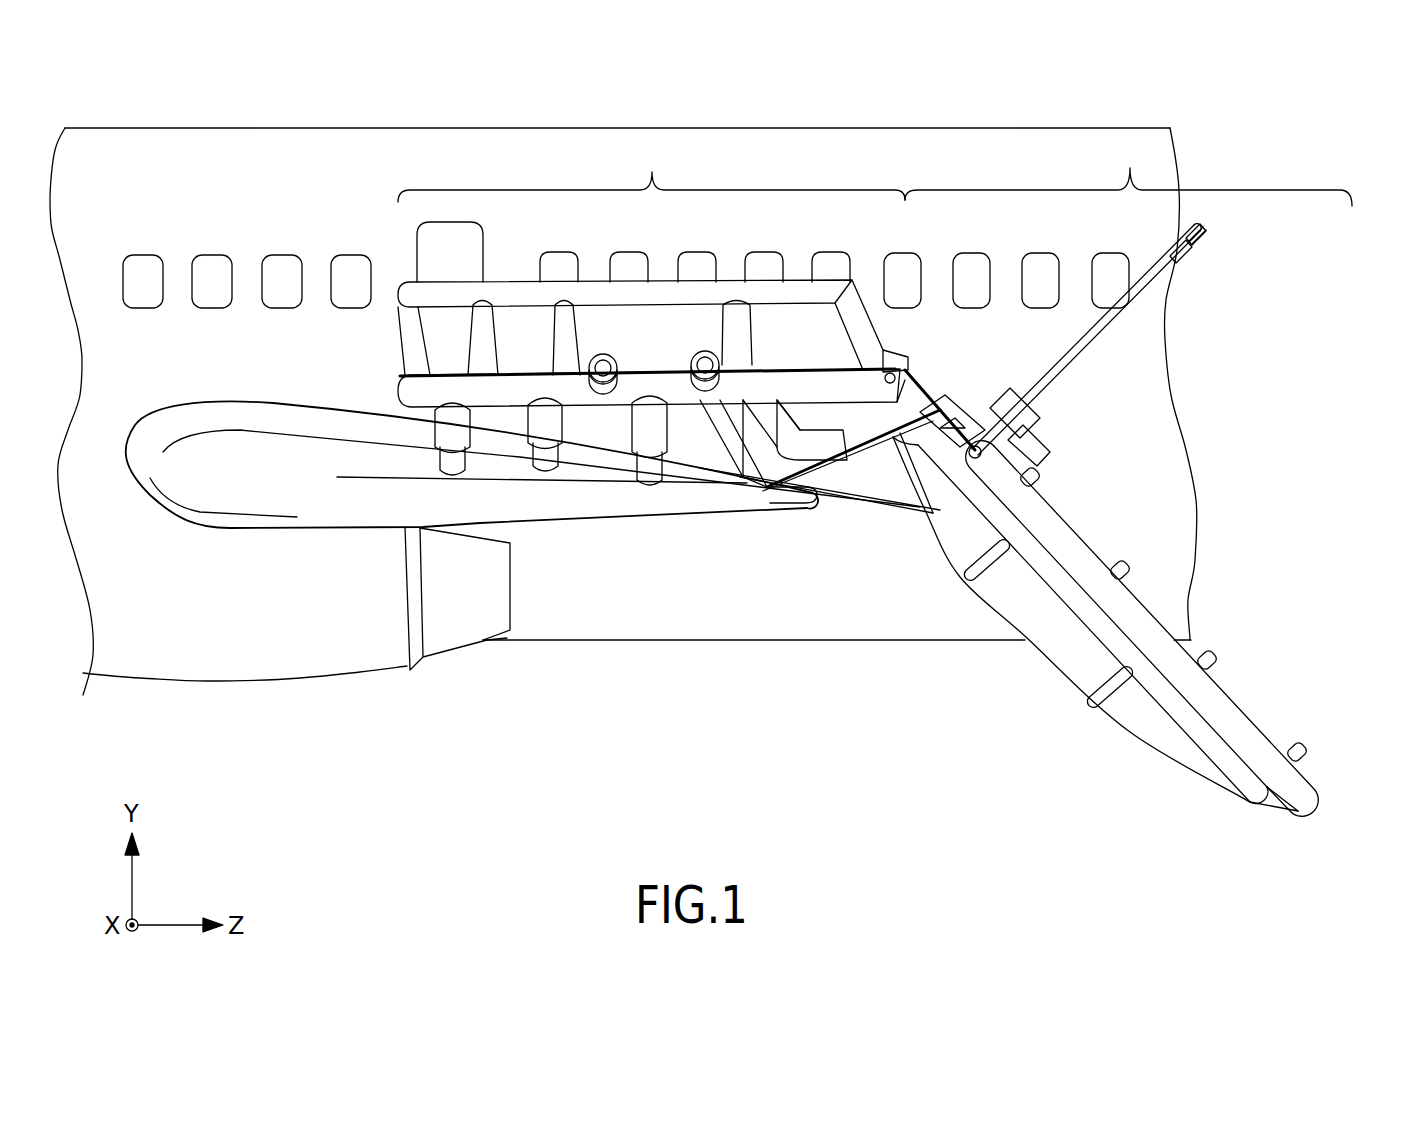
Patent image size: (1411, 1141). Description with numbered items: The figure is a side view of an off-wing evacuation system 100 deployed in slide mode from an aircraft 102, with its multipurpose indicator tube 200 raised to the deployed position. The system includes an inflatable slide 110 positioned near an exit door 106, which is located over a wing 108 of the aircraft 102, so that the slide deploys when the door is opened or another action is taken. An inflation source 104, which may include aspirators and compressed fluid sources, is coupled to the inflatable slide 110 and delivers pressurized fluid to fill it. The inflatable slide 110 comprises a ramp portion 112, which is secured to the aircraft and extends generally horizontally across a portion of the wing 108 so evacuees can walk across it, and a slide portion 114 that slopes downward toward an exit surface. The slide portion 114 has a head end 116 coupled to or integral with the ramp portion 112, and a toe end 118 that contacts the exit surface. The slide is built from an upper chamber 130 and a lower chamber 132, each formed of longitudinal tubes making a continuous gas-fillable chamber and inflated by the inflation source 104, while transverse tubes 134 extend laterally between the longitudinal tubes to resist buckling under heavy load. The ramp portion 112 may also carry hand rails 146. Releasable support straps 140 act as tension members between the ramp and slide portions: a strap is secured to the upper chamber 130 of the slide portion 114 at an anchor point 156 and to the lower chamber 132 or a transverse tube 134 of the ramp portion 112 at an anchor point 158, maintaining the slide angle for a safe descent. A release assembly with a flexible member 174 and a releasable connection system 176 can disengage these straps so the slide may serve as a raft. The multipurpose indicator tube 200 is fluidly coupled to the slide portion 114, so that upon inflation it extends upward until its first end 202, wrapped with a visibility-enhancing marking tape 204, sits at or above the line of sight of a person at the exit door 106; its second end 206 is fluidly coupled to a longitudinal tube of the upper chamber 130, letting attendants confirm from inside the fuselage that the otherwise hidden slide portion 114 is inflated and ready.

The off-wing evacuation system 100 is at (1208, 108).
The aircraft 102 is at (229, 183).
The inflation source 104 is at (605, 382).
The exit door 106 is at (477, 250).
The wing 108 is at (317, 418).
The inflatable slide 110 is at (398, 285).
The ramp portion 112 is at (651, 169).
The slide portion 114 is at (1128, 169).
The head end 116 is at (924, 365).
The toe end 118 is at (1316, 815).
The upper chamber 130 is at (412, 393).
The lower chamber 132 is at (1204, 737).
The transverse tubes 134 is at (452, 447).
The releasable support straps 140 is at (867, 433).
The hand rails 146 is at (655, 298).
The anchor point 156 is at (948, 403).
The anchor point 158 is at (753, 498).
The flexible member 174 is at (940, 372).
The releasable connection system 176 is at (780, 487).
The multipurpose indicator tube 200 is at (1073, 360).
The first end 202 is at (1200, 232).
The marking tape 204 is at (1187, 258).
The second end 206 is at (998, 458).